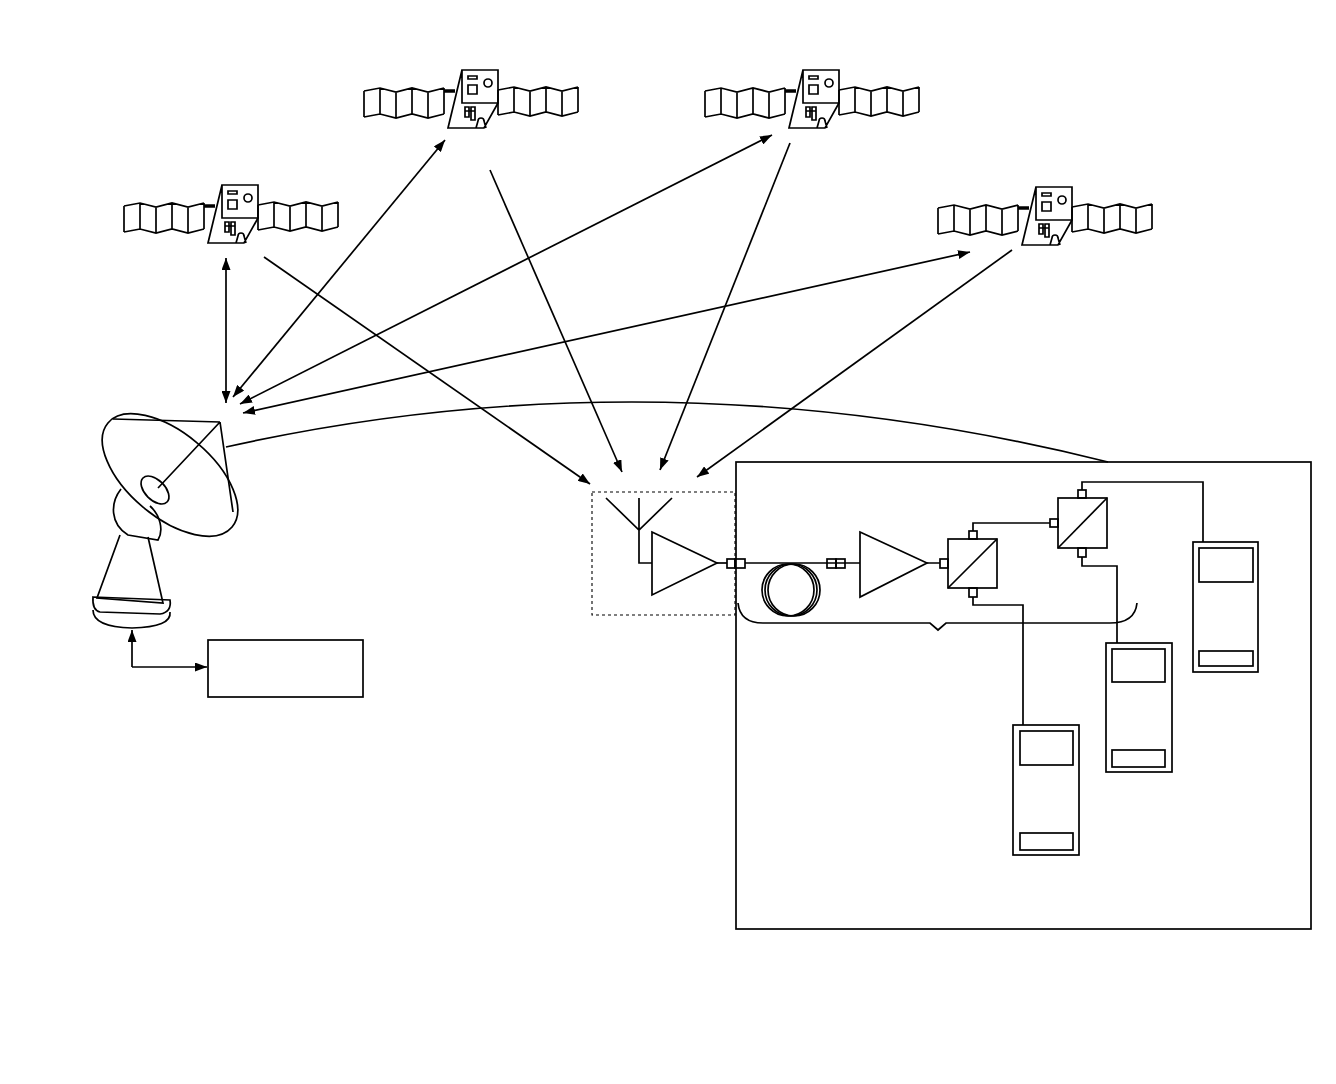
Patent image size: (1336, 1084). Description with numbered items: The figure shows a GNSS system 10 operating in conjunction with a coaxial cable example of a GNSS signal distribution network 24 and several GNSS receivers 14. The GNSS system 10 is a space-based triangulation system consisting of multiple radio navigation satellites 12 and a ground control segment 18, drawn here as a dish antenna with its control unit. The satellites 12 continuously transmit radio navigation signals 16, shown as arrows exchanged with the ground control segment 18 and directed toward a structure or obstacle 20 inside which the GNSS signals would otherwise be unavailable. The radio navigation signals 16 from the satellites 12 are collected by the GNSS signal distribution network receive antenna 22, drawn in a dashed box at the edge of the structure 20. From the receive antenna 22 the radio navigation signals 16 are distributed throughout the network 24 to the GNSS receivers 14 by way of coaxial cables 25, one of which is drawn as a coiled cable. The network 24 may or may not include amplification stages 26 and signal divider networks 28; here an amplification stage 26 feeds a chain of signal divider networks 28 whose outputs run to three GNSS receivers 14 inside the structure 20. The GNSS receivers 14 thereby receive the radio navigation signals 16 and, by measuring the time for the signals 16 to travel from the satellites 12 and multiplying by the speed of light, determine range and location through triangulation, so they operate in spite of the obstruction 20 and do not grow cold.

The GNSS system 10 is at (696, 494).
The radio navigation satellite 12 is at (205, 243).
The GNSS receiver 14 is at (1260, 674).
The radio navigation signal 16 is at (547, 300).
The ground control segment 18 is at (168, 580).
The structure or obstacle 20 is at (1172, 460).
The GNSS signal distribution network receive antenna 22 is at (590, 615).
The GNSS signal distribution network 24 is at (937, 633).
The coaxial cable 25 is at (778, 562).
The amplification stage 26 is at (873, 533).
The signal divider network 28 is at (1048, 503).